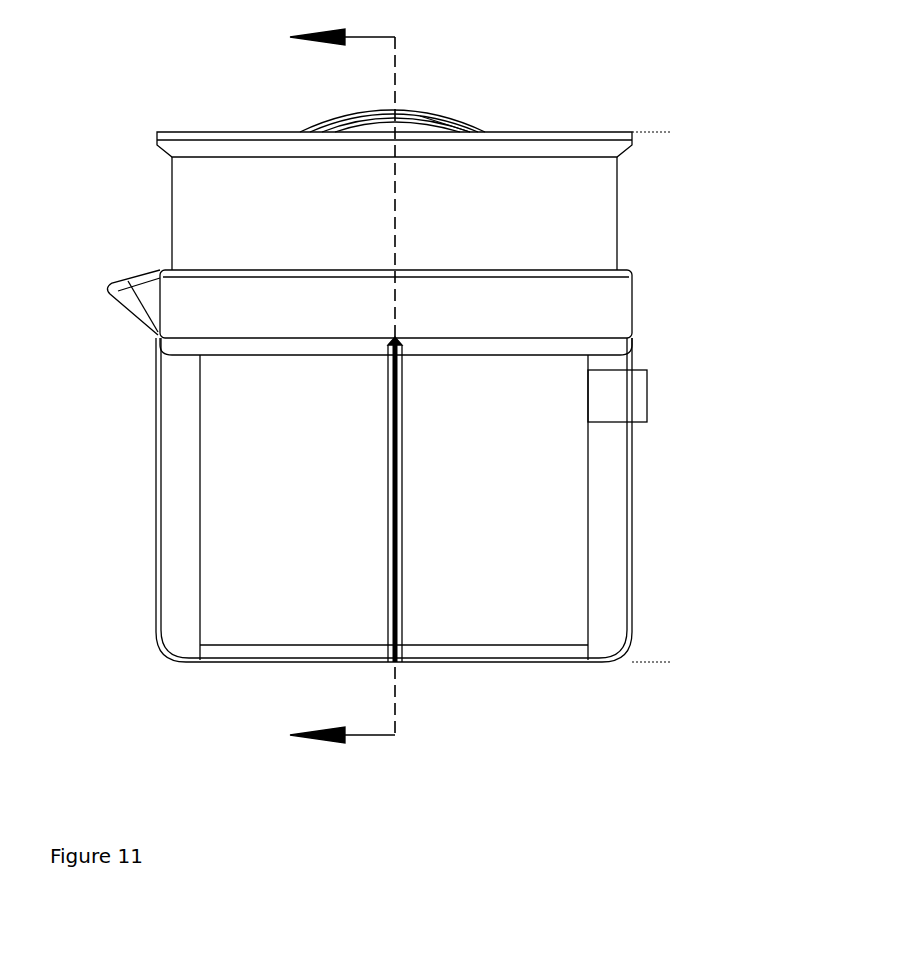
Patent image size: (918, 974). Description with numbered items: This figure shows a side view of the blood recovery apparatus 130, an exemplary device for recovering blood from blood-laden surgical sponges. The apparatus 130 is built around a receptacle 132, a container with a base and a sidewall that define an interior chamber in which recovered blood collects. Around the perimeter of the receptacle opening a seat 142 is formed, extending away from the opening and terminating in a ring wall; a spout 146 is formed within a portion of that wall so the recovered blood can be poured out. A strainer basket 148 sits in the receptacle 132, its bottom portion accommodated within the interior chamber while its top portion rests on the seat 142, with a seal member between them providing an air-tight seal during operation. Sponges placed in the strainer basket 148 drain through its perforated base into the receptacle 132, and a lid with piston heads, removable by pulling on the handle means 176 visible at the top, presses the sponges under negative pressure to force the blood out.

The blood recovery apparatus 130 is at (432, 827).
The receptacle 132 is at (620, 538).
The seat 142 is at (184, 507).
The spout 146 is at (108, 290).
The strainer basket 148 is at (607, 221).
The handle means 176 is at (435, 113).